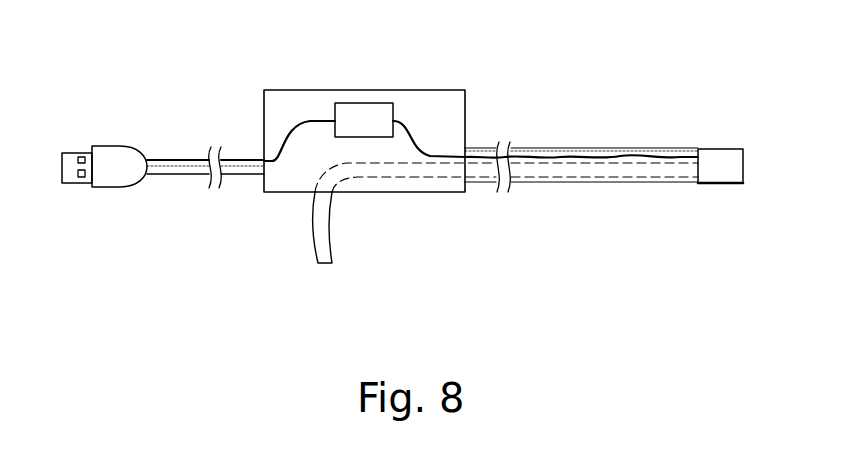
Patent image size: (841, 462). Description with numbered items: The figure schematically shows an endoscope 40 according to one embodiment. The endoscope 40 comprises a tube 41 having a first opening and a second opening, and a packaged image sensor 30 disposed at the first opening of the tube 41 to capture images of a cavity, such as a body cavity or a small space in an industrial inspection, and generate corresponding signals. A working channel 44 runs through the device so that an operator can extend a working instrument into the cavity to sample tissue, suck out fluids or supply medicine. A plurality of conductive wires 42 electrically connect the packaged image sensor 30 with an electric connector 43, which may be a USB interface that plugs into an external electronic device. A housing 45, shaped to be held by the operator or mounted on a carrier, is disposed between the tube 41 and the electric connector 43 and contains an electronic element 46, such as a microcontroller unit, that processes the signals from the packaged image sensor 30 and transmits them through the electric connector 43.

The endoscope 40 is at (62, 86).
The electric connector 43 is at (117, 154).
The conductive wires 42 is at (177, 157).
The housing 45 is at (294, 89).
The electronic element 46 is at (370, 110).
The tube 41 is at (594, 146).
The working channel 44 is at (539, 170).
The packaged image sensor 30 is at (721, 157).